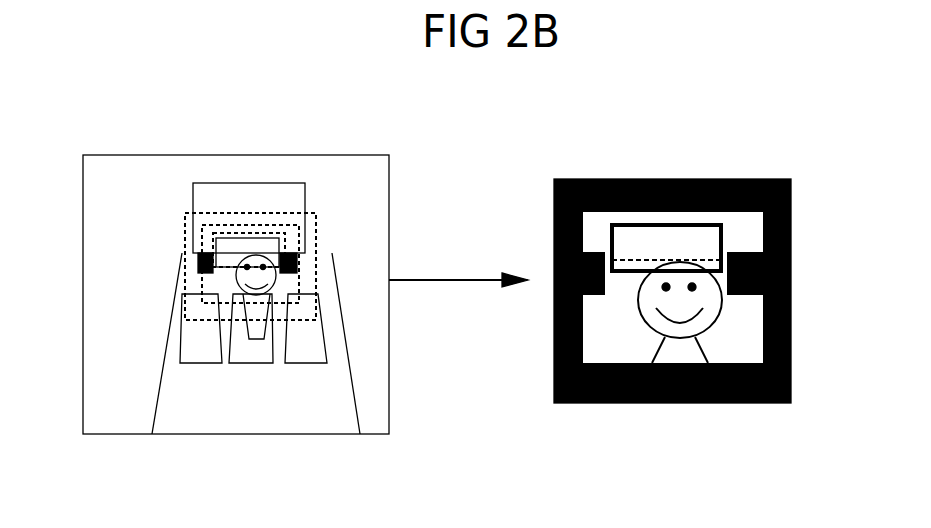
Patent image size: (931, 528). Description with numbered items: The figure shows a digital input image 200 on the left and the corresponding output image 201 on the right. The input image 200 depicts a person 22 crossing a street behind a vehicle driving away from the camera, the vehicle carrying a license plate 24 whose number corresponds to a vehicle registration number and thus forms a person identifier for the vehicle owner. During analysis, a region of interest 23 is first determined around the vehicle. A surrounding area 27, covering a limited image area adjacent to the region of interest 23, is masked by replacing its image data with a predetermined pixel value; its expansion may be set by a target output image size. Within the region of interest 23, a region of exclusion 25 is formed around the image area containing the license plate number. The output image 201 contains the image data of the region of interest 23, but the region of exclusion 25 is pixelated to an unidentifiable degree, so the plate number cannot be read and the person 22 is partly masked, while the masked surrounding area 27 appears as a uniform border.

The digital input image 200 is at (187, 150).
The output image 201 is at (757, 173).
The person 22 is at (253, 330).
The region of interest 23 is at (300, 280).
The license plate 24 is at (248, 248).
The region of exclusion 25 is at (283, 241).
The surrounding area 27 is at (310, 222).